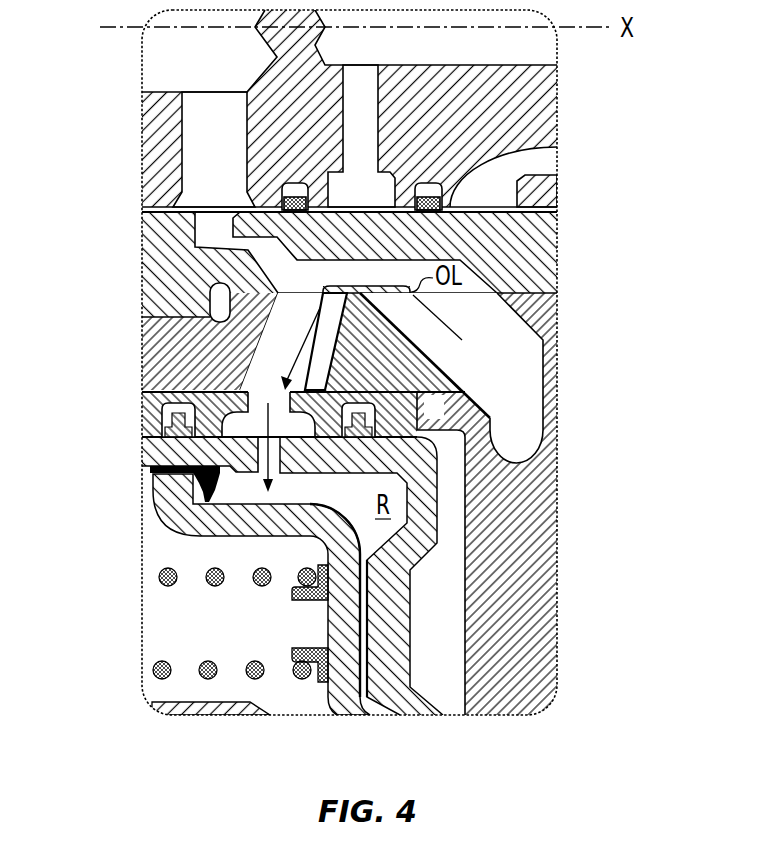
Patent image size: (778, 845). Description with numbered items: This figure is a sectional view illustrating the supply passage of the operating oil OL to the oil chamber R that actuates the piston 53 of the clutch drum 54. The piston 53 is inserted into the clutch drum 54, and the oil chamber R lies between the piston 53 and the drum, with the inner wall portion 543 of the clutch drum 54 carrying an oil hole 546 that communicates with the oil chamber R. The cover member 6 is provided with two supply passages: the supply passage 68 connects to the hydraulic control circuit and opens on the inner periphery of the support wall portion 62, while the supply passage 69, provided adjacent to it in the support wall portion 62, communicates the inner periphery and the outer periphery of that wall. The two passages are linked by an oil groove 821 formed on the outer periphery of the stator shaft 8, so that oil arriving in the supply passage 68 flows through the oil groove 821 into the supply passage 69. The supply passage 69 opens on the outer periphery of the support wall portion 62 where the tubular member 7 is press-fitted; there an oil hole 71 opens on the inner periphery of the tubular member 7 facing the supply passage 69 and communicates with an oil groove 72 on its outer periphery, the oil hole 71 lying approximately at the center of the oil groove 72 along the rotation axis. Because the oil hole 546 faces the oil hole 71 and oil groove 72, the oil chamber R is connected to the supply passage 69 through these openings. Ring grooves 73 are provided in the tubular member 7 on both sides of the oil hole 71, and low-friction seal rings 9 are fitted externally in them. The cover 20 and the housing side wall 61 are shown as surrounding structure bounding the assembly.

The cover member 20 is at (134, 123).
The stator shaft 8 is at (130, 243).
The oil groove 821 is at (364, 250).
The support wall portion 62 is at (152, 334).
The oil groove 72 is at (210, 341).
The ring groove 73 is at (303, 342).
The supply passage 69 is at (301, 355).
The oil hole 71 is at (326, 341).
The supply passage 68 is at (519, 355).
The cover member 6 is at (572, 490).
The housing side wall 61 is at (545, 592).
The tubular member 7 is at (130, 394).
The seal ring 9 is at (160, 421).
The inner wall portion 543 is at (152, 459).
The oil hole 546 is at (281, 466).
The clutch drum 54 is at (420, 631).
The piston 53 is at (168, 521).